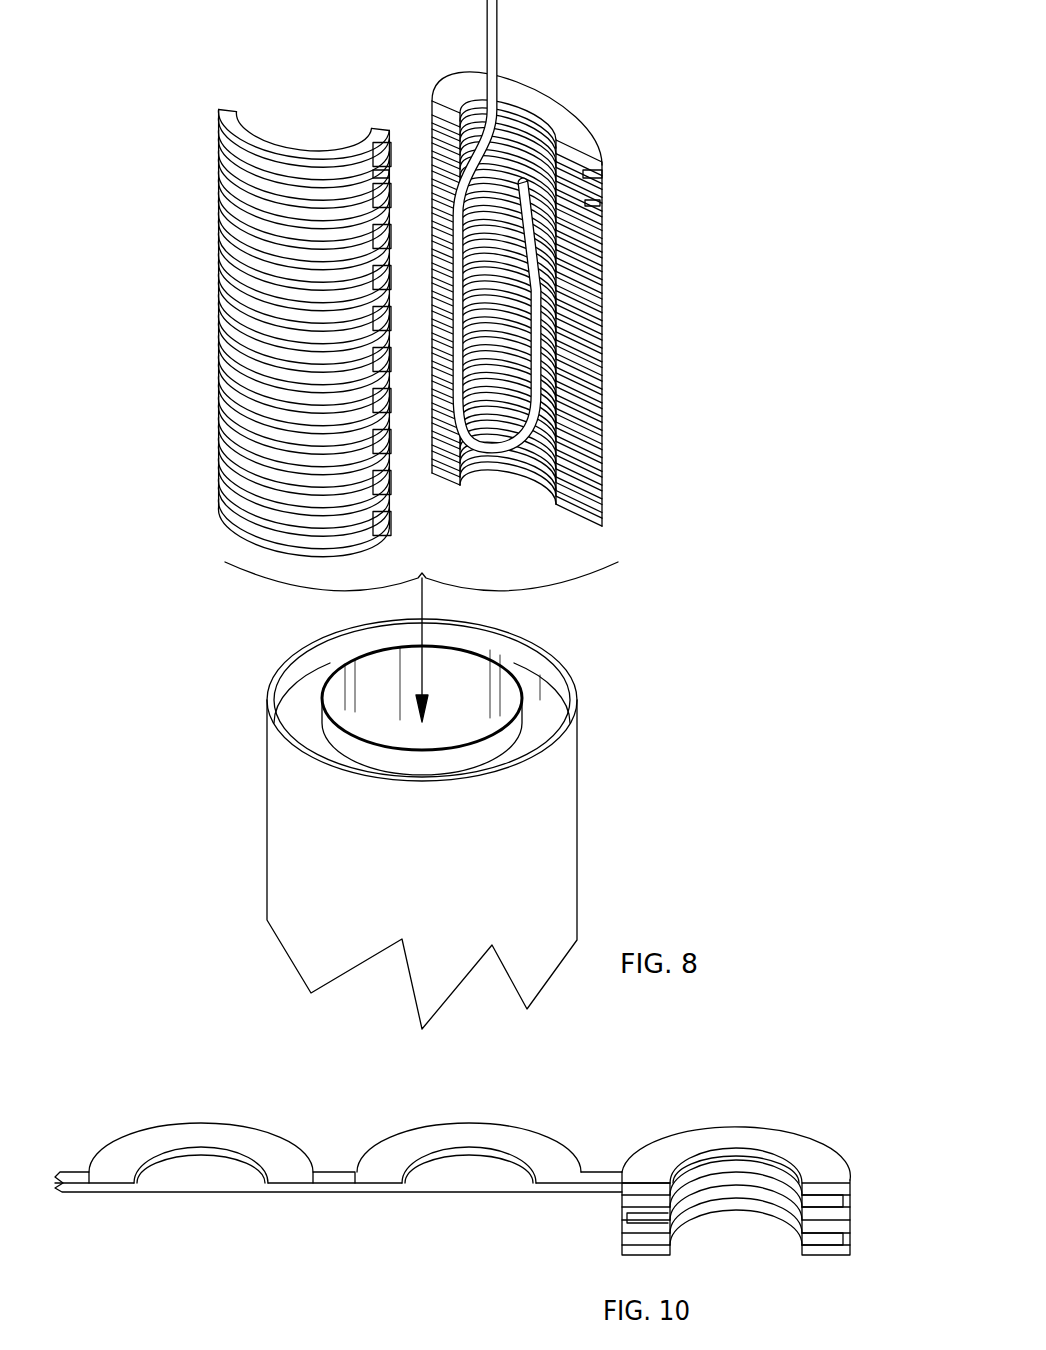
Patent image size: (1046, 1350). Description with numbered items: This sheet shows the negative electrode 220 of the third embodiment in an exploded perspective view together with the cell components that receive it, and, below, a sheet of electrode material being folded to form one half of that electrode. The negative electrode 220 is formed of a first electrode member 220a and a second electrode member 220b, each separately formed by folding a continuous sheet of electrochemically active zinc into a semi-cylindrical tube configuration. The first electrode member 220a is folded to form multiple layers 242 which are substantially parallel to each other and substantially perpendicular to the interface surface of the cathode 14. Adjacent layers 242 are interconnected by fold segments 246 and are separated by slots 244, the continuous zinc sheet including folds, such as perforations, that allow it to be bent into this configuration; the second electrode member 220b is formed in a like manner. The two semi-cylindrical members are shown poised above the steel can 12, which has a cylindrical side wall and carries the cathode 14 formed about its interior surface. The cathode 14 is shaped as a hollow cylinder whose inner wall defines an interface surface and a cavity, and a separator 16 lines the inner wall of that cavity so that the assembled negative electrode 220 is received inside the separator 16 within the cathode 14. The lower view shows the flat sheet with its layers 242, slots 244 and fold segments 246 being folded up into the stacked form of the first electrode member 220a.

In FIG. 8, the steel can 12 is at (290, 818).
In FIG. 8, the cathode 14 is at (540, 690).
In FIG. 8, the separator 16 is at (345, 660).
In FIG. 8, the negative electrode 220 is at (483, 53).
In FIG. 8, the first electrode member 220a is at (215, 100).
In FIG. 10, the first electrode member 220a is at (753, 1098).
In FIG. 8, the second electrode member 220b is at (595, 80).
In FIG. 8, the layers 242 is at (252, 103).
In FIG. 10, the layers 242 is at (822, 1152).
In FIG. 8, the slots 244 is at (385, 212).
In FIG. 10, the slots 244 is at (835, 1218).
In FIG. 8, the fold segments 246 is at (388, 160).
In FIG. 10, the fold segments 246 is at (845, 1200).